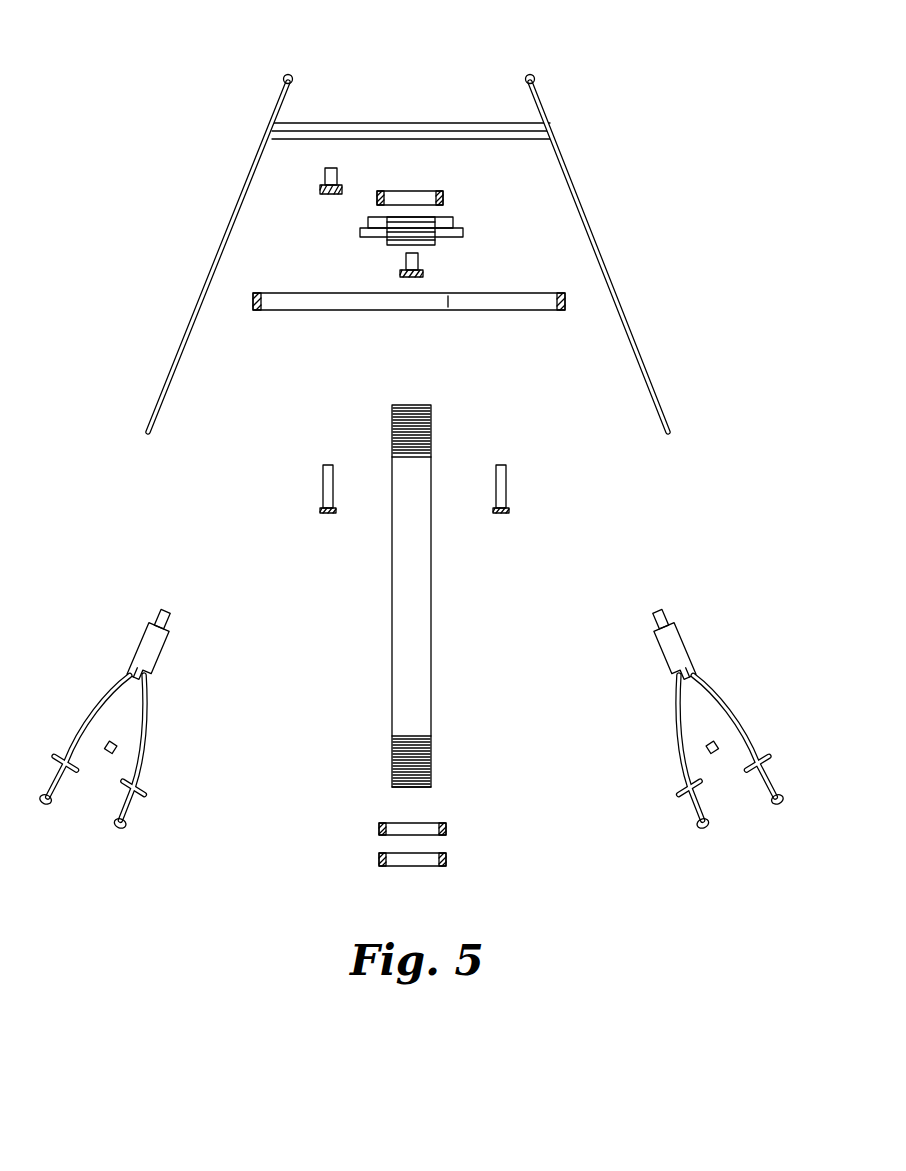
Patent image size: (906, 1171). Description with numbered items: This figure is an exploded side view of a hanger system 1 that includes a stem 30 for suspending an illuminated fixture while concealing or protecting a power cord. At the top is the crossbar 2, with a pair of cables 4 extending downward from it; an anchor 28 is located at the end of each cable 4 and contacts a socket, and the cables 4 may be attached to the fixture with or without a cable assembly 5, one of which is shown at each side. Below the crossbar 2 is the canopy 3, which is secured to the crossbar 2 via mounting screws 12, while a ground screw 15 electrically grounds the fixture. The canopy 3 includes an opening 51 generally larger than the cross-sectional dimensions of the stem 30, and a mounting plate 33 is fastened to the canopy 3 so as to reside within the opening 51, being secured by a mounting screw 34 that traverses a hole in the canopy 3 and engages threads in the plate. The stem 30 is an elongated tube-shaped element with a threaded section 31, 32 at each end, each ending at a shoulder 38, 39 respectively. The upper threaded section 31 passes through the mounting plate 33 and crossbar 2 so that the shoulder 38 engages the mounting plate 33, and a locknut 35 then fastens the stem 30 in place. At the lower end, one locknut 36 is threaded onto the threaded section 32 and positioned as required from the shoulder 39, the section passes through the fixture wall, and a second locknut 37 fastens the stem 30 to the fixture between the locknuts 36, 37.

The hanger system 1 is at (156, 158).
The crossbar 2 is at (436, 130).
The canopy 3 is at (283, 305).
The cables 4 is at (214, 262).
The cable assembly 5 is at (106, 650).
The mounting screws 12 is at (322, 492).
The ground screw 15 is at (338, 180).
The anchor 28 is at (283, 78).
The stem 30 is at (407, 630).
The threaded section 31 is at (394, 407).
The threaded section 32 is at (393, 777).
The mounting plate 33 is at (464, 232).
The mounting screw 34 is at (405, 264).
The locknut 35 is at (444, 198).
The locknut 36 is at (447, 827).
The locknut 37 is at (447, 858).
The shoulder 38 is at (394, 451).
The shoulder 39 is at (393, 737).
The opening 51 is at (450, 308).